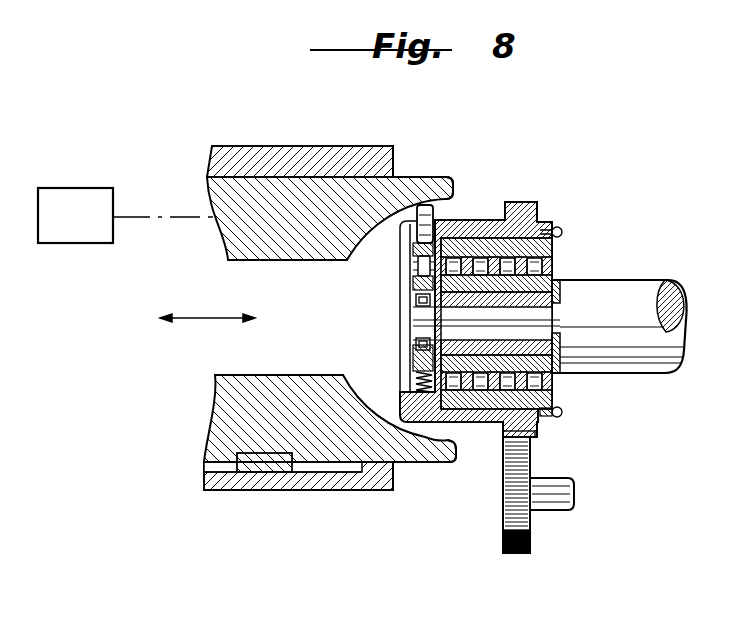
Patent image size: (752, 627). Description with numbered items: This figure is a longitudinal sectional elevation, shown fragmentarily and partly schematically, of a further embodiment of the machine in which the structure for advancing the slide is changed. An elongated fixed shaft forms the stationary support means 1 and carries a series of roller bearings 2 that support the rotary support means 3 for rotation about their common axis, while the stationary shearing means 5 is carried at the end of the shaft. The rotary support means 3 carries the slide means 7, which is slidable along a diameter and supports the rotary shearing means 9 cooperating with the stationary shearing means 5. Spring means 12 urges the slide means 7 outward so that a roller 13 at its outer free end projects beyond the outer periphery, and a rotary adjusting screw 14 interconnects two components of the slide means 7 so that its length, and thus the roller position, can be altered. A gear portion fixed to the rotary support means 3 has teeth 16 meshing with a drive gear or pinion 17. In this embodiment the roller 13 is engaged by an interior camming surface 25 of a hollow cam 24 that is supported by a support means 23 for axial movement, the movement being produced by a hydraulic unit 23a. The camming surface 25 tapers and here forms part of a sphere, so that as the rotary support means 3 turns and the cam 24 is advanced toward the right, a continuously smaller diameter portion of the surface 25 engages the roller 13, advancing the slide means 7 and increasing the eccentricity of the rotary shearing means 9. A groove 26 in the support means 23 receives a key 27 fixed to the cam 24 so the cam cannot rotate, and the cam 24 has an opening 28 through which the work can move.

The stationary support means 1 is at (621, 365).
The roller bearings 2 is at (544, 266).
The rotary support means 3 is at (477, 224).
The stationary shearing means 5 is at (563, 297).
The slide means 7 is at (424, 359).
The rotary shearing means 9 is at (415, 313).
The spring means 12 is at (419, 380).
The roller 13 is at (422, 205).
The rotary adjusting screw 14 is at (413, 268).
The teeth 16 is at (522, 203).
The drive gear or pinion 17 is at (522, 551).
The support means 23 is at (277, 150).
The hydraulic unit 23a is at (92, 189).
The hollow cam 24 is at (212, 418).
The interior camming surface 25 is at (449, 196).
The groove 26 is at (300, 473).
The key 27 is at (252, 471).
The opening 28 is at (213, 357).